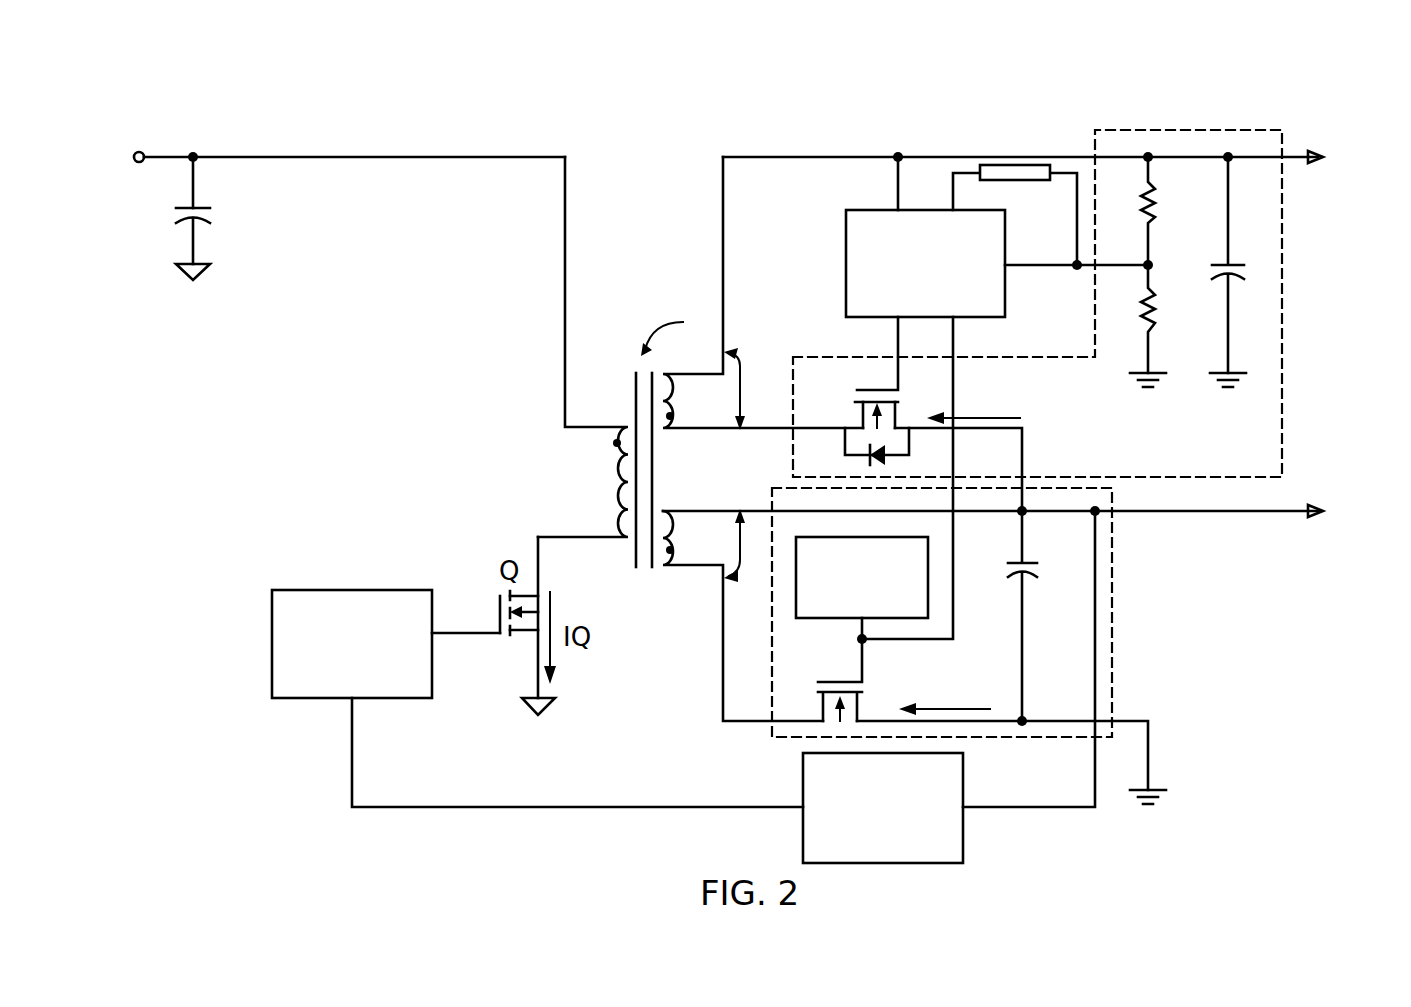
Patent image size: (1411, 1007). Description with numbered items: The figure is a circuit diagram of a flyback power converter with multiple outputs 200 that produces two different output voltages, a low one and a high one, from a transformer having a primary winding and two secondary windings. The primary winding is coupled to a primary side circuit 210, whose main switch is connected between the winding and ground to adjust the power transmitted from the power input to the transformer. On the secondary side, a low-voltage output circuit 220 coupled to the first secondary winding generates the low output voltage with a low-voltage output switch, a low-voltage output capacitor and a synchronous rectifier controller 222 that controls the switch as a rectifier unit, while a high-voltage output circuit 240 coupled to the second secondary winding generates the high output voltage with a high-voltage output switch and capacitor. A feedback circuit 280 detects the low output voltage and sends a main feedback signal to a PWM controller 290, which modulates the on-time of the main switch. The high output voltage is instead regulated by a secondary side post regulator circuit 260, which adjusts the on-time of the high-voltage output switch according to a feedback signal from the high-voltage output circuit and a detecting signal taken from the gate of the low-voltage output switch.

The flyback power converter with multiple outputs 200 is at (710, 100).
The primary side circuit 210 is at (418, 141).
The low-voltage output circuit 220 is at (1112, 658).
The synchronous rectifier controller 222 is at (847, 537).
The high-voltage output circuit 240 is at (1282, 370).
The secondary side post regulator circuit 260 is at (846, 263).
The feedback circuit 280 is at (963, 782).
The PWM controller 290 is at (378, 590).